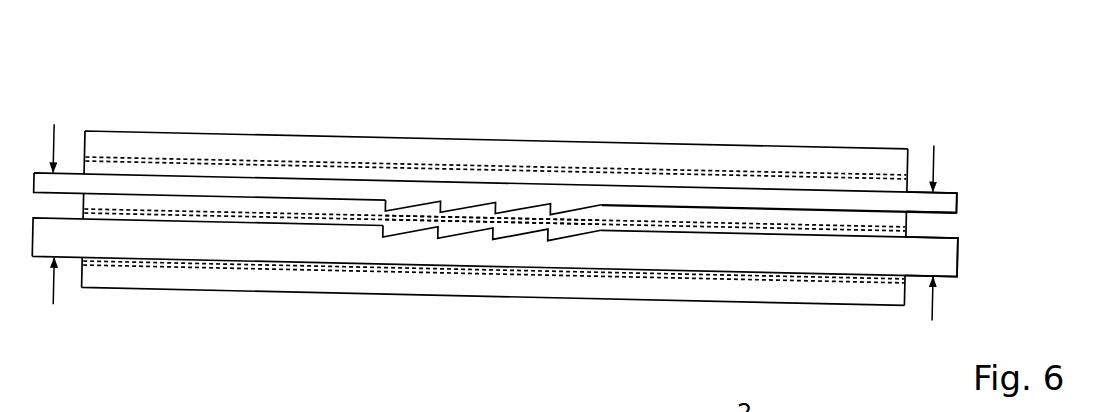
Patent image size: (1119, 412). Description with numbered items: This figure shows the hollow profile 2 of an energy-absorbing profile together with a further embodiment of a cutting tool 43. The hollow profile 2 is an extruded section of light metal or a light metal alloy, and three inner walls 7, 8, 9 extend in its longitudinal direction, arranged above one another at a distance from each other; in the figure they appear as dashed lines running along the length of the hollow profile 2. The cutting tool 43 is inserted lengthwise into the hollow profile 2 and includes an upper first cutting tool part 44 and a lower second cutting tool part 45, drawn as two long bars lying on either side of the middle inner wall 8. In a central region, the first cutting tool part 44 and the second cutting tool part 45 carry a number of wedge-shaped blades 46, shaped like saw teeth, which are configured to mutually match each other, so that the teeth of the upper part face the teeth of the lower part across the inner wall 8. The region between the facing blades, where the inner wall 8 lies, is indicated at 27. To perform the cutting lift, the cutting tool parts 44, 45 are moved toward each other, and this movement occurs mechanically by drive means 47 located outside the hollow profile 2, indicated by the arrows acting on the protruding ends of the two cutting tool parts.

The hollow profile 2 is at (760, 145).
The inner wall 7 is at (207, 163).
The inner wall 8 is at (152, 211).
The inner wall 9 is at (208, 267).
The separation gap between tooth rows 27 is at (519, 224).
The cutting tool 43 is at (1012, 194).
The first cutting tool part 44 is at (288, 188).
The second cutting tool part 45 is at (320, 250).
The wedge-shaped blades 46 is at (402, 198).
The drive means 47 is at (935, 160).